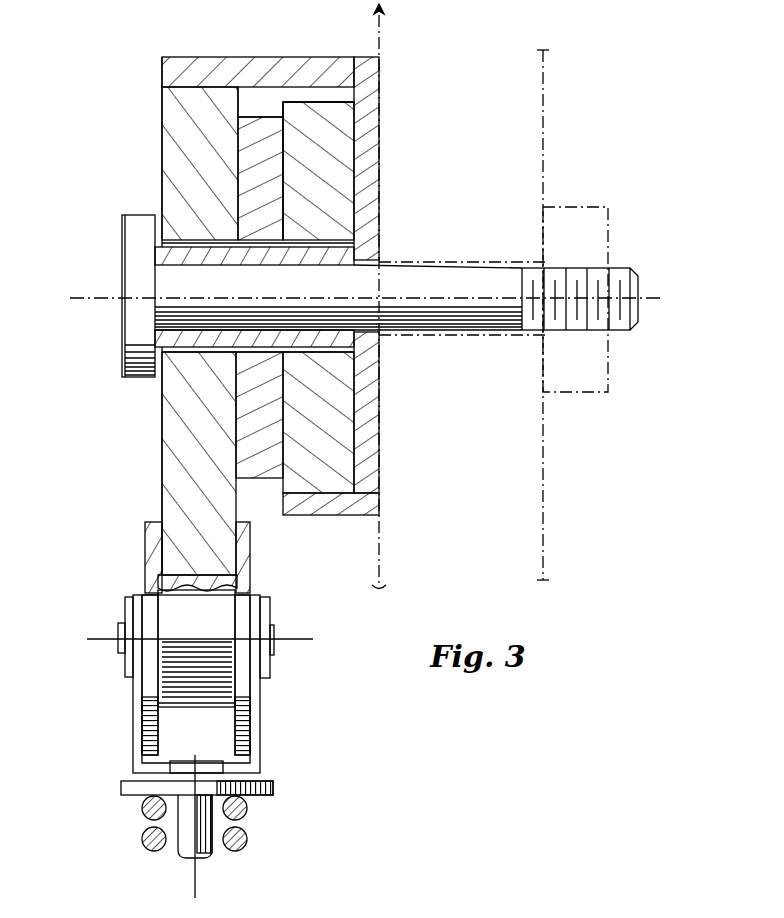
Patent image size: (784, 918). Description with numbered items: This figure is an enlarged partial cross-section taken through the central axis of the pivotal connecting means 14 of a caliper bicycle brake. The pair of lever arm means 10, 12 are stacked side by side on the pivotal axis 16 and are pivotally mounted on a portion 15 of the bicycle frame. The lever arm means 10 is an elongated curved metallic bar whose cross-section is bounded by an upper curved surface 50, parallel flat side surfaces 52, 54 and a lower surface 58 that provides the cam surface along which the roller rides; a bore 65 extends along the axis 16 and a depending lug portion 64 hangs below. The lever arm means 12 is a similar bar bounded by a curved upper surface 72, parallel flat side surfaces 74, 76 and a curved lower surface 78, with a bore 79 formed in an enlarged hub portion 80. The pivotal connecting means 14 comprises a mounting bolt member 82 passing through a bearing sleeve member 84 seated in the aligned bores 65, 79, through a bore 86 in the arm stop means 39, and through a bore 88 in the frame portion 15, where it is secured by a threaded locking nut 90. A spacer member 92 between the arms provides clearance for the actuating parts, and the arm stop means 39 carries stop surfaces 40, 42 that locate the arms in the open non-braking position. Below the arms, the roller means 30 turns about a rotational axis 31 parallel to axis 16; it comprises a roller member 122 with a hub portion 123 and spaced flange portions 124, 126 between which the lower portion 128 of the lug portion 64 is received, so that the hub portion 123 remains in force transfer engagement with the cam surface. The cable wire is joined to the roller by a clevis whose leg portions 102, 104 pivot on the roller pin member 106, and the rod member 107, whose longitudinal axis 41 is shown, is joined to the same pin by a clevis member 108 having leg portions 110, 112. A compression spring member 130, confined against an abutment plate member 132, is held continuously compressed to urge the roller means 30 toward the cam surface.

The lever arm means 10 is at (162, 412).
The lever arm means 12 is at (338, 420).
The pivotal connecting means 14 is at (122, 256).
The frame portion 15 is at (548, 135).
The pivotal axis 16 is at (73, 298).
The roller means 30 is at (158, 708).
The rotational axis 31 is at (105, 640).
The arm stop means 39 is at (386, 58).
The stop surface 40 is at (165, 100).
The longitudinal axis 41 is at (196, 887).
The stop surface 42 is at (355, 482).
The upper curved surface 50 is at (210, 85).
The side surface 52 is at (162, 122).
The side surface 54 is at (250, 100).
The lower surface 58 is at (210, 583).
The depending lug portion 64 is at (175, 462).
The bore 65 is at (200, 248).
The curved upper surface 72 is at (312, 100).
The side surface 74 is at (282, 112).
The side surface 76 is at (360, 143).
The curved lower surface 78 is at (325, 505).
The bore 79 is at (340, 350).
The enlarged hub portion 80 is at (340, 178).
The mounting bolt member 82 is at (135, 325).
The bearing sleeve member 84 is at (185, 335).
The bore 86 is at (372, 268).
The bore 88 is at (455, 258).
The threaded locking nut 90 is at (605, 205).
The spacer member 92 is at (258, 462).
The leg portion 102 is at (130, 604).
The leg portion 104 is at (265, 673).
The roller pin member 106 is at (273, 650).
The rod member 107 is at (180, 855).
The clevis member 108 is at (131, 757).
The leg portion 110 is at (140, 708).
The leg portion 112 is at (254, 730).
The roller member 122 is at (150, 678).
The hub portion 123 is at (212, 708).
The flange portion 124 is at (152, 540).
The flange portion 126 is at (248, 546).
The lower portion 128 is at (175, 553).
The compression spring member 130 is at (247, 840).
The abutment plate member 132 is at (125, 788).